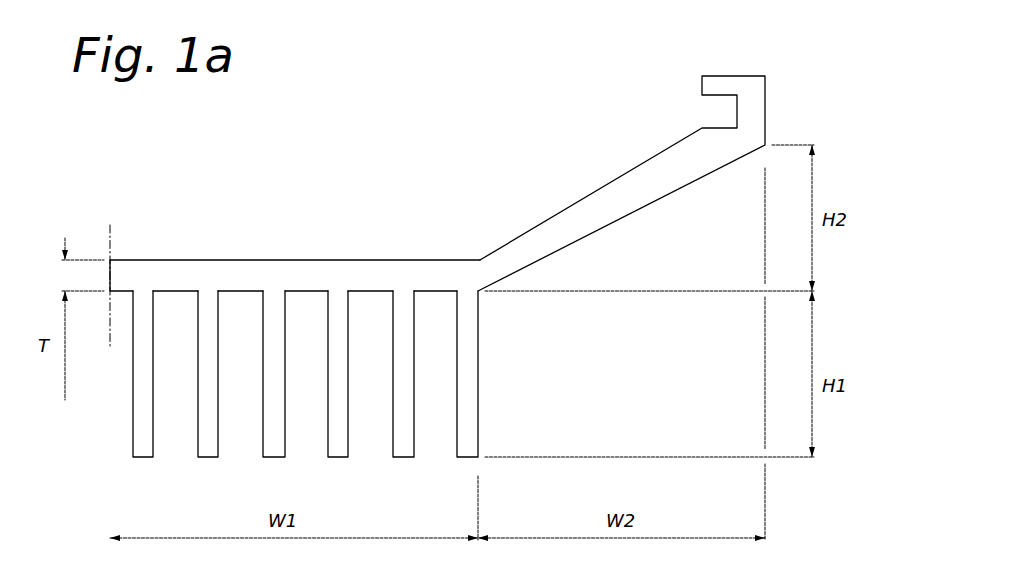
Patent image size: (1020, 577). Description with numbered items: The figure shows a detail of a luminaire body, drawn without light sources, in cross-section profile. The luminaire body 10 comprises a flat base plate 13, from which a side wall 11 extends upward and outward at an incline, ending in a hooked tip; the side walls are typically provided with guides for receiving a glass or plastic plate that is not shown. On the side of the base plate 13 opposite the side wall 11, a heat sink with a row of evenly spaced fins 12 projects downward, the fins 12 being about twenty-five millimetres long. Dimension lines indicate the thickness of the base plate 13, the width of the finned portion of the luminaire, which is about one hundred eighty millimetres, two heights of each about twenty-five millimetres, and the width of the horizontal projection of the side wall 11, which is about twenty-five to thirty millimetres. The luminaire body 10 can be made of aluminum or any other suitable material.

The heat sink profile 10 is at (360, 245).
The side walls 11 is at (633, 178).
The fins 12 is at (206, 432).
The base plate 13 is at (213, 258).